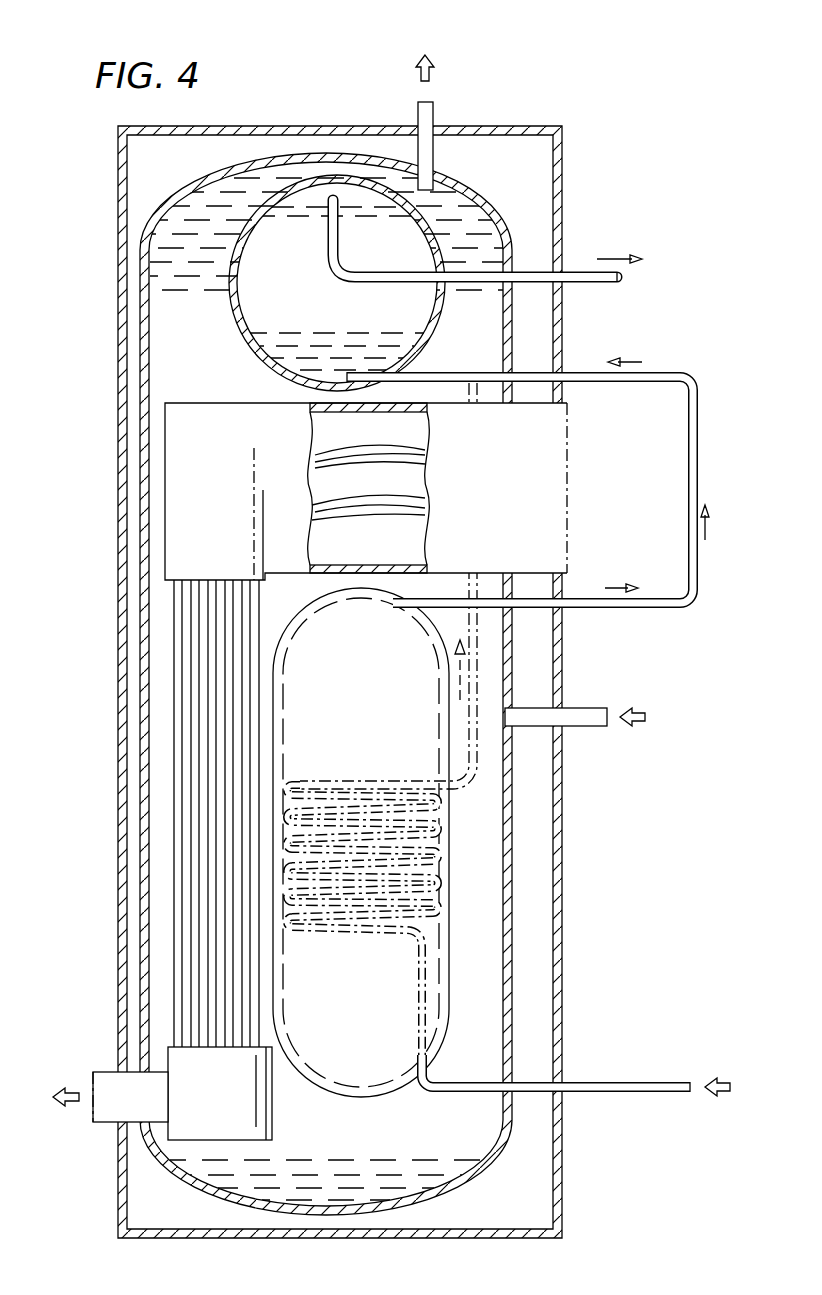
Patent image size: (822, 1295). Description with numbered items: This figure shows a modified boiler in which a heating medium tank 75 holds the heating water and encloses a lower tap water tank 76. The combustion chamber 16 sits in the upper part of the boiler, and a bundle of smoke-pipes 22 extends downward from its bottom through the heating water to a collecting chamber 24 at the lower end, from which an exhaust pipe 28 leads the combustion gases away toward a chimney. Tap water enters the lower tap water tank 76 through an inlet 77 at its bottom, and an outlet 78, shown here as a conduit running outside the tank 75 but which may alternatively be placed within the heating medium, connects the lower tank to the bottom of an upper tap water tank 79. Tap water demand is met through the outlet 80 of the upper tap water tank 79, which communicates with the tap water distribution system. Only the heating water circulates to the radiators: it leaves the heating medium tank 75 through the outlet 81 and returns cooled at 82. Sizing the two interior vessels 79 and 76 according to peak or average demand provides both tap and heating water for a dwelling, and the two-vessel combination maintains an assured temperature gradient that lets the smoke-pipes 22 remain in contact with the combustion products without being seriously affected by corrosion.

The combustion chamber 16 is at (237, 450).
The smoke-pipes 22 is at (187, 992).
The collecting chamber 24 is at (230, 1101).
The exhaust pipe 28 is at (142, 1110).
The heating medium tank 75 is at (498, 1153).
The lower tap water tank 76 is at (383, 1093).
The inlet 77 is at (605, 1082).
The outlet 78 is at (668, 598).
The upper tap water tank 79 is at (445, 235).
The outlet 80 is at (600, 272).
The outlet 81 is at (434, 115).
The return 82 is at (582, 708).